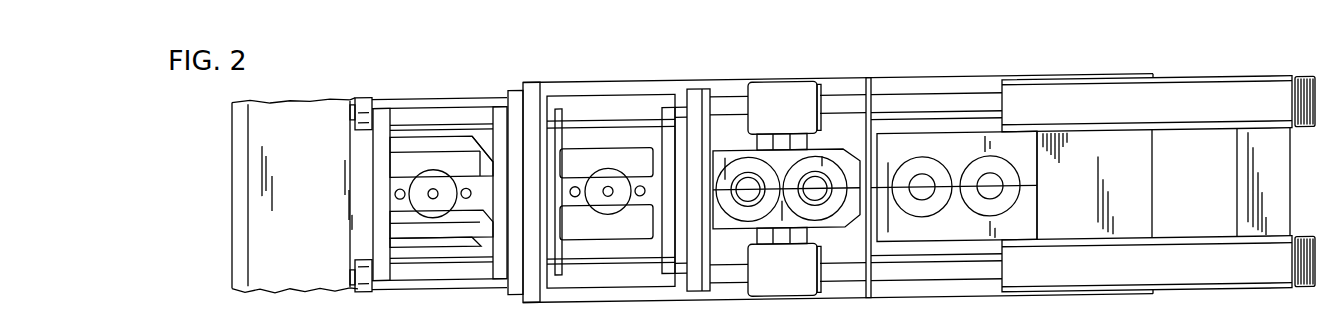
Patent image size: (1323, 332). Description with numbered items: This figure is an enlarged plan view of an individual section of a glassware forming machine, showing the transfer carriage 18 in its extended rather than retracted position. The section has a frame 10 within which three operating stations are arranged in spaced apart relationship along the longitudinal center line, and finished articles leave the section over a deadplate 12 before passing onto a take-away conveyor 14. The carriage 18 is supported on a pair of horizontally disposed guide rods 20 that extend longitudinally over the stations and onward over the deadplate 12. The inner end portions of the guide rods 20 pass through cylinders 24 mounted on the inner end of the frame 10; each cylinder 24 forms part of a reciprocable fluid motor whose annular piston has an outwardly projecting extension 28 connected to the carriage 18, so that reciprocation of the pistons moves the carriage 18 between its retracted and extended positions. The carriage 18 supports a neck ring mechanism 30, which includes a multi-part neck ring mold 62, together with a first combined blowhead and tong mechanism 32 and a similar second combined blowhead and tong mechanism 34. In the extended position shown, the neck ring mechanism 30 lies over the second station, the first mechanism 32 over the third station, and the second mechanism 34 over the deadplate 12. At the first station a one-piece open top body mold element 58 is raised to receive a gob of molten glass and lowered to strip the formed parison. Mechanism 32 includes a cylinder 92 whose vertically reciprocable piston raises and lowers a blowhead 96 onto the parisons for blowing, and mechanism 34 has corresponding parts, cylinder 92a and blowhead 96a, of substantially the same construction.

The frame 10 is at (935, 76).
The deadplate 12 is at (417, 245).
The take-away conveyor 14 is at (311, 196).
The carriage 18 is at (450, 290).
The guide rods 20 is at (357, 96).
The cylinders 24 is at (1151, 123).
The extension 28 is at (852, 95).
The neck ring mechanism 30 is at (789, 76).
The first combined blowhead and tong mechanism 32 is at (588, 140).
The second combined blowhead and tong mechanism 34 is at (426, 140).
The body mold element 58 is at (988, 186).
The neck ring mold 62 is at (837, 202).
The cylinder 92 is at (616, 208).
The cylinder 92a is at (440, 210).
The blowhead 96 is at (622, 134).
The blowhead 96a is at (462, 143).